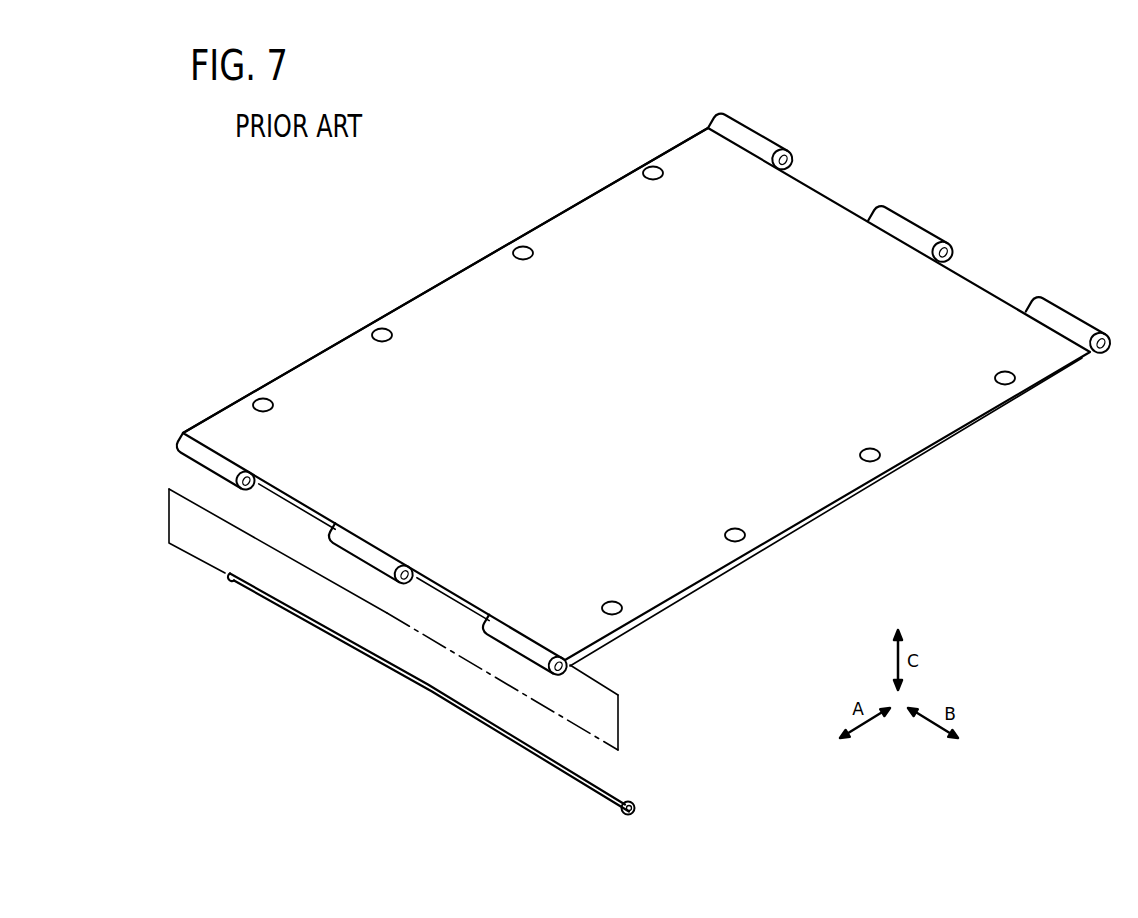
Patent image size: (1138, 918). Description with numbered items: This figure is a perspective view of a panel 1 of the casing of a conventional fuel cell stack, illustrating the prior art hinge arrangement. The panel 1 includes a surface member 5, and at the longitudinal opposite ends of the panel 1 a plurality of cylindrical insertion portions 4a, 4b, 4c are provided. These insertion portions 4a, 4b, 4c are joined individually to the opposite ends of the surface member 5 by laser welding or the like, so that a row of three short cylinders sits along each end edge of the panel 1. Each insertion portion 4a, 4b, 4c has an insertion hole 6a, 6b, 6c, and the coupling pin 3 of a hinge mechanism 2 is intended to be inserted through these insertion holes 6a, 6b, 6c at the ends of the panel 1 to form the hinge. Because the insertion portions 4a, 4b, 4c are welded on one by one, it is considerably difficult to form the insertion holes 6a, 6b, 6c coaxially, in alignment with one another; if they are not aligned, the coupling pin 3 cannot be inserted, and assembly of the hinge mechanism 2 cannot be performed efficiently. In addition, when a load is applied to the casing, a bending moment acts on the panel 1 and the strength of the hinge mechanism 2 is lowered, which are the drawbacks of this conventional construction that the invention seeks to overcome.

The panel 1 is at (313, 346).
The hinge mechanism 2 is at (166, 443).
The coupling pin 3 is at (403, 686).
The insertion portion 4a is at (1053, 322).
The insertion portion 4b is at (895, 228).
The insertion portion 4c is at (738, 138).
The surface member 5 is at (455, 298).
The insertion hole 6a is at (1097, 337).
The insertion hole 6b is at (940, 243).
The insertion hole 6c is at (783, 152).